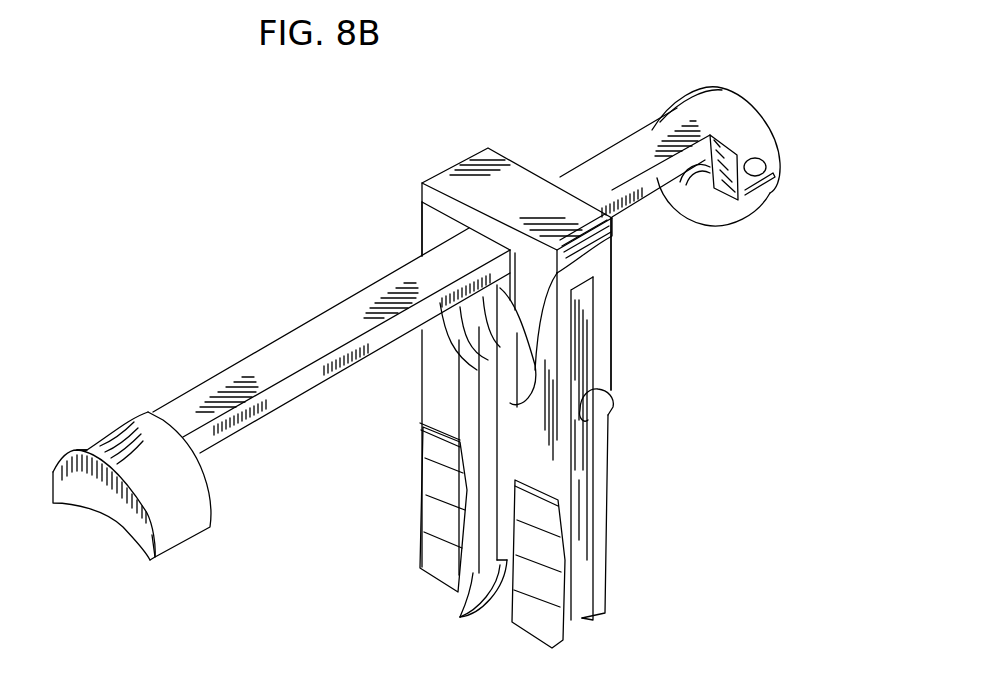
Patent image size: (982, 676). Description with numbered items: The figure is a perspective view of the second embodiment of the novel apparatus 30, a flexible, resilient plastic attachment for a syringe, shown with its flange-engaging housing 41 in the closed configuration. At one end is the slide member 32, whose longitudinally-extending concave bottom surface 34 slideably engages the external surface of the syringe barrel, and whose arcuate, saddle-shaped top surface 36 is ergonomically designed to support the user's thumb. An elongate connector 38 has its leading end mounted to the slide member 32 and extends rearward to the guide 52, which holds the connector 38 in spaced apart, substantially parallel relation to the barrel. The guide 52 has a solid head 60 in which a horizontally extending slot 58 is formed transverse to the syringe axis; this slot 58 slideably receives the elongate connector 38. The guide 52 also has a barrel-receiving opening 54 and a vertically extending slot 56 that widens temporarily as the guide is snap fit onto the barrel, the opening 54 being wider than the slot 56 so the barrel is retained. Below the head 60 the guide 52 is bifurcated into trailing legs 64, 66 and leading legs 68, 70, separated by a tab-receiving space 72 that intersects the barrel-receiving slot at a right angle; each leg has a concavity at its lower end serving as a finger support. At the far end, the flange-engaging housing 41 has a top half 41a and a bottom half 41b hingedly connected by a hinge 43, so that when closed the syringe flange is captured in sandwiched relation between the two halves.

The novel apparatus 30 is at (197, 185).
The slide member 32 is at (80, 452).
The concave bottom surface 34 is at (94, 508).
The saddle-shaped top surface 36 is at (201, 499).
The elongate connector 38 is at (269, 340).
The flange-engaging housing 41 is at (740, 97).
The top half 41a is at (714, 96).
The bottom half 41b is at (705, 216).
The hinge 43 is at (744, 193).
The guide 52 is at (611, 355).
The barrel-receiving opening 54 is at (470, 376).
The vertically extending slot 56 is at (470, 580).
The horizontally extending slot 58 is at (444, 229).
The solid head 60 is at (495, 188).
The trailing leg 64 is at (607, 320).
The trailing leg 66 is at (557, 268).
The leading leg 68 is at (567, 543).
The leading leg 70 is at (427, 488).
The tab-receiving space 72 is at (427, 440).